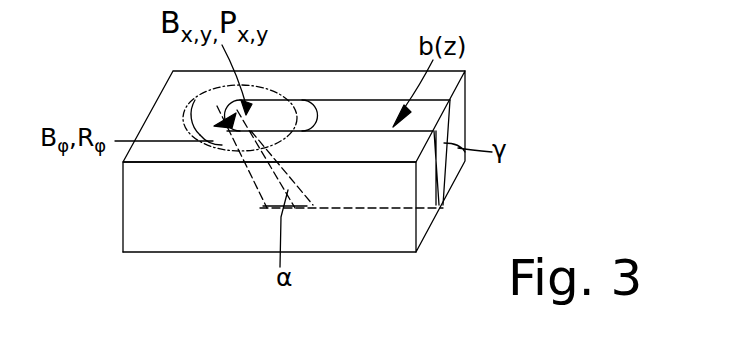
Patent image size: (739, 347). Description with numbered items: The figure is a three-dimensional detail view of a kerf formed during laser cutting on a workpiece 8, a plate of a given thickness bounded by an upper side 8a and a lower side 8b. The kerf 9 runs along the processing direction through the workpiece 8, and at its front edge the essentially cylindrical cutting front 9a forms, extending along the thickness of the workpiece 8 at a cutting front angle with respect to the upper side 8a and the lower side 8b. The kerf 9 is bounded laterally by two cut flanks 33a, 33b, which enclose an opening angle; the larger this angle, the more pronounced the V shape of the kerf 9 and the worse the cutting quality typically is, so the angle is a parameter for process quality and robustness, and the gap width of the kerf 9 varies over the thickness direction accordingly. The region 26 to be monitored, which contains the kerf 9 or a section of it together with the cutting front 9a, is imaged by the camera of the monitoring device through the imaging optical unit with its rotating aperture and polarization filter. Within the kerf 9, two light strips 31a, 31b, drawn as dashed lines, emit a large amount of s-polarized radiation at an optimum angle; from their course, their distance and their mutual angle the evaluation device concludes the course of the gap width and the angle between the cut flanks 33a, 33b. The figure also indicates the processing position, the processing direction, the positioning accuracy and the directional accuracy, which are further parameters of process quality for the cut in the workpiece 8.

The workpiece 8 is at (286, 153).
The upper side 8a is at (192, 83).
The lower side 8b is at (399, 236).
The kerf 9 is at (363, 151).
The cutting front 9a is at (255, 187).
The region to be monitored 26 is at (283, 90).
The first light strip 31a is at (190, 108).
The second light strip 31b is at (250, 147).
The first lateral cut flank 33a is at (468, 100).
The second lateral cut flank 33b is at (448, 170).